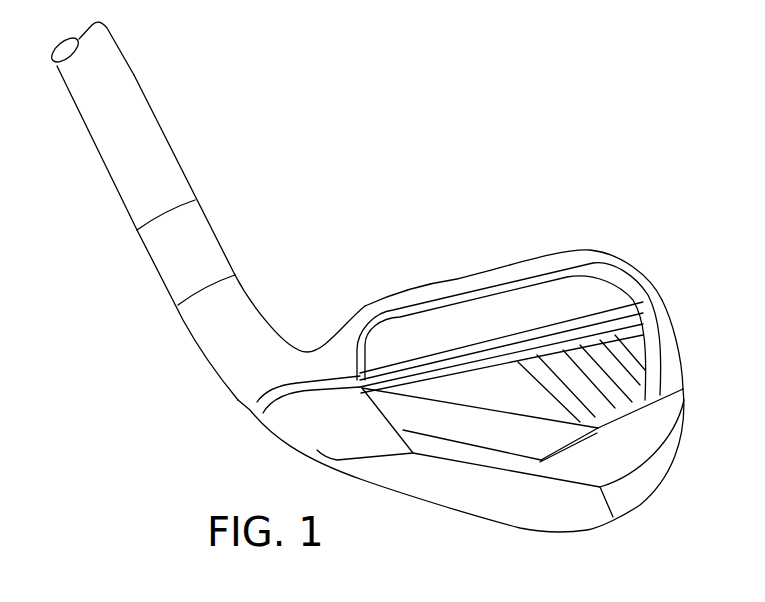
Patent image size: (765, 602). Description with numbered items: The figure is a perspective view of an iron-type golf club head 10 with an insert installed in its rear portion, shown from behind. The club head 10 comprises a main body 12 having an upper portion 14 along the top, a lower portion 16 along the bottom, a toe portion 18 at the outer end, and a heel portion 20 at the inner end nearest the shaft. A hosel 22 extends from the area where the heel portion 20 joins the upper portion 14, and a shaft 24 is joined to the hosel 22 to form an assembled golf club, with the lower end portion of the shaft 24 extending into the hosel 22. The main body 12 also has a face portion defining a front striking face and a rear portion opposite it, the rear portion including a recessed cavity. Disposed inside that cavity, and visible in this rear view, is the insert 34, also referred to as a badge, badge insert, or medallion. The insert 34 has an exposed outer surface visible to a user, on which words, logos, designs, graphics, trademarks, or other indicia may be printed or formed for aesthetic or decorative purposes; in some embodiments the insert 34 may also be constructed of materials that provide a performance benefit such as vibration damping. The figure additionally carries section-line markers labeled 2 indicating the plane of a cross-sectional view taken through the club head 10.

The iron-type golf club head 10 is at (600, 213).
The main body 12 is at (620, 252).
The upper portion 14 is at (470, 275).
The lower portion 16 is at (587, 507).
The toe portion 18 is at (675, 338).
The heel portion 20 is at (282, 440).
The hosel 22 is at (267, 317).
The shaft 24 is at (158, 128).
The insert 34 is at (607, 288).
The section line 2- 2 is at (332, 149).